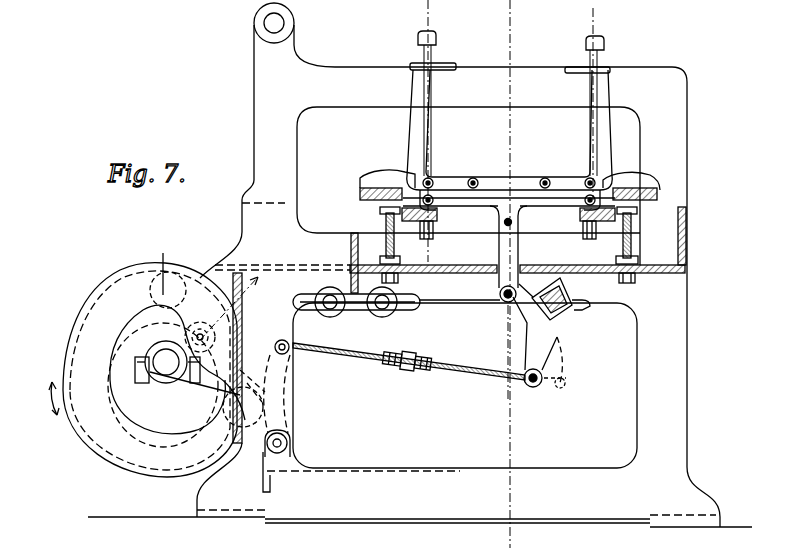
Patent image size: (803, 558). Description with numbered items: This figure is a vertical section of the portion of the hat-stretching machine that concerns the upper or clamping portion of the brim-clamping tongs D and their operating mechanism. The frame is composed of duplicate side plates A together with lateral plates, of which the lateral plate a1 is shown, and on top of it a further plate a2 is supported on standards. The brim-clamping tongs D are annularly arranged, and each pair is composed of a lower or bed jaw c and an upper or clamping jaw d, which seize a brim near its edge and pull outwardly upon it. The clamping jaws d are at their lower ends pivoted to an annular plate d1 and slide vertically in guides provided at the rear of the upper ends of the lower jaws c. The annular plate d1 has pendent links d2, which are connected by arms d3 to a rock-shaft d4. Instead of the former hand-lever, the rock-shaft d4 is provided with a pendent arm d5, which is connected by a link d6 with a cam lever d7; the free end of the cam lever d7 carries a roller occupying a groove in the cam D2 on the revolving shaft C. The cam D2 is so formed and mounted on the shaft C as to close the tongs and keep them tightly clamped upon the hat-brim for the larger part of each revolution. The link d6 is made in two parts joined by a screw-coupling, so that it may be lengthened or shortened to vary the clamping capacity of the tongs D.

The side plates A is at (420, 265).
The plate a2 is at (518, 188).
The lateral plate a1 is at (517, 245).
The brim-clamping tongs D is at (510, 126).
The upper or clamping jaw d is at (511, 40).
The lower or bed jaw c is at (510, 64).
The annular plate d1 is at (508, 218).
The pendent links d2 is at (514, 250).
The arms d3 is at (516, 293).
The rock-shaft d4 is at (568, 294).
The pendent arm d5 is at (539, 336).
The link d6 is at (400, 358).
The cam lever d7 is at (295, 377).
The cam D2 is at (156, 365).
The revolving shaft C is at (187, 368).